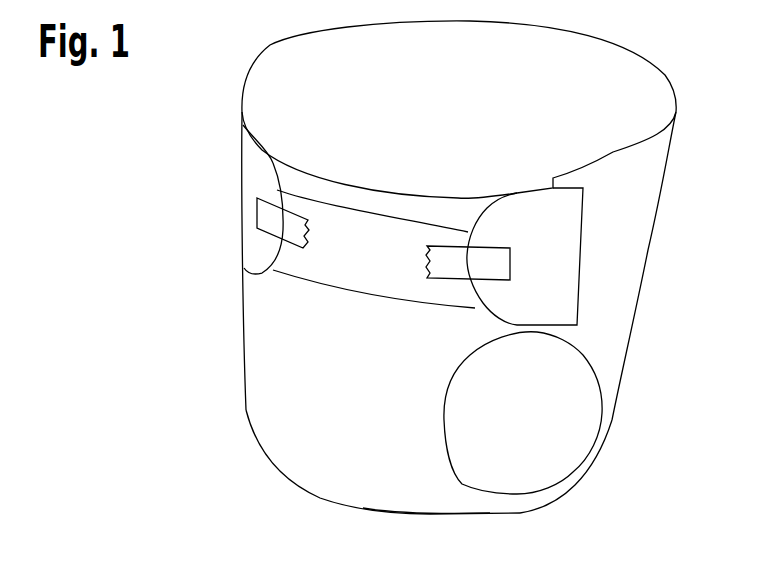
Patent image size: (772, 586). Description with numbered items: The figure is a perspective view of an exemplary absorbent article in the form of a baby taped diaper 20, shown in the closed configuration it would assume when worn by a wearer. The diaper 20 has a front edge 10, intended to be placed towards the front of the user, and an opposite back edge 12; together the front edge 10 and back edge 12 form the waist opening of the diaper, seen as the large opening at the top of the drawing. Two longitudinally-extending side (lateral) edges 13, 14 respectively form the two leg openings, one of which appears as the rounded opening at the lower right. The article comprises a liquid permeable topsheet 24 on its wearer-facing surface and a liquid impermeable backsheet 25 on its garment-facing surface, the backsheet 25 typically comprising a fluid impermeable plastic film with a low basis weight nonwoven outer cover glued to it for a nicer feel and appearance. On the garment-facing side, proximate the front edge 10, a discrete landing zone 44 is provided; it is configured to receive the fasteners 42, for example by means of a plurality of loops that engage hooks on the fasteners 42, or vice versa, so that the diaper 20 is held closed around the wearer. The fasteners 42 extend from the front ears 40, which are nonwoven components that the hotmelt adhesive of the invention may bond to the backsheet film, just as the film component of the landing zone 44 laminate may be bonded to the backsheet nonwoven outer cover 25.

The front edge 10 is at (313, 174).
The back edge 12 is at (563, 33).
The side edge 13 is at (247, 401).
The side edge 14 is at (511, 497).
The taped diaper 20 is at (603, 478).
The topsheet 24 is at (568, 423).
The backsheet 25 is at (432, 480).
The front ear 40 is at (557, 262).
The fastener 42 is at (271, 228).
The landing zone 44 is at (368, 284).